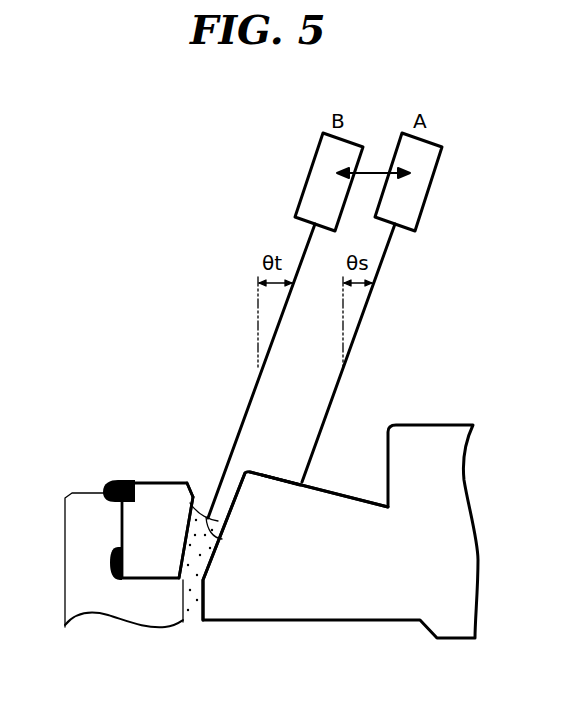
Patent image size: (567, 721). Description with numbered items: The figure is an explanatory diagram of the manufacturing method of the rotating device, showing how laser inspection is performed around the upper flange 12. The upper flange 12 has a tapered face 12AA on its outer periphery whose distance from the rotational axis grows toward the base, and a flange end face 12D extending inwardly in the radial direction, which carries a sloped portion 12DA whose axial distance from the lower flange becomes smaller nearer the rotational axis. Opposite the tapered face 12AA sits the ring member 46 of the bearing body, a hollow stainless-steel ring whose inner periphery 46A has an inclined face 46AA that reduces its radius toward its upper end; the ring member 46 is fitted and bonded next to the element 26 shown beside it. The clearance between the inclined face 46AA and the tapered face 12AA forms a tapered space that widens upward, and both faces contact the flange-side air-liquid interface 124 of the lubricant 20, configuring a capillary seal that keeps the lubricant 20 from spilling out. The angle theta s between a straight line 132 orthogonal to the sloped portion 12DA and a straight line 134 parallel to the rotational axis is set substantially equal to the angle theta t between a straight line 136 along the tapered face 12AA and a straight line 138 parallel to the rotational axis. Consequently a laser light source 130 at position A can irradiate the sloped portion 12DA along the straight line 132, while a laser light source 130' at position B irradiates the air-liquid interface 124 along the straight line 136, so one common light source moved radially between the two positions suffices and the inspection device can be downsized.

The upper flange 12 is at (327, 595).
The flange end face 12D is at (348, 493).
The sloped portion 12DA is at (283, 481).
The tapered face 12AA is at (212, 556).
The lubricant 20 is at (193, 607).
The holding member 26 is at (90, 522).
The ring member 46 is at (133, 532).
The inner periphery 46A is at (182, 553).
The inclined face 46AA is at (187, 533).
The flange-side air-liquid interface 124 is at (220, 535).
The laser light source 130 is at (445, 185).
The laser light source 130' is at (286, 182).
The straight line 132 is at (373, 295).
The straight line 134 is at (343, 327).
The straight line 136 is at (270, 338).
The straight line 138 is at (258, 305).